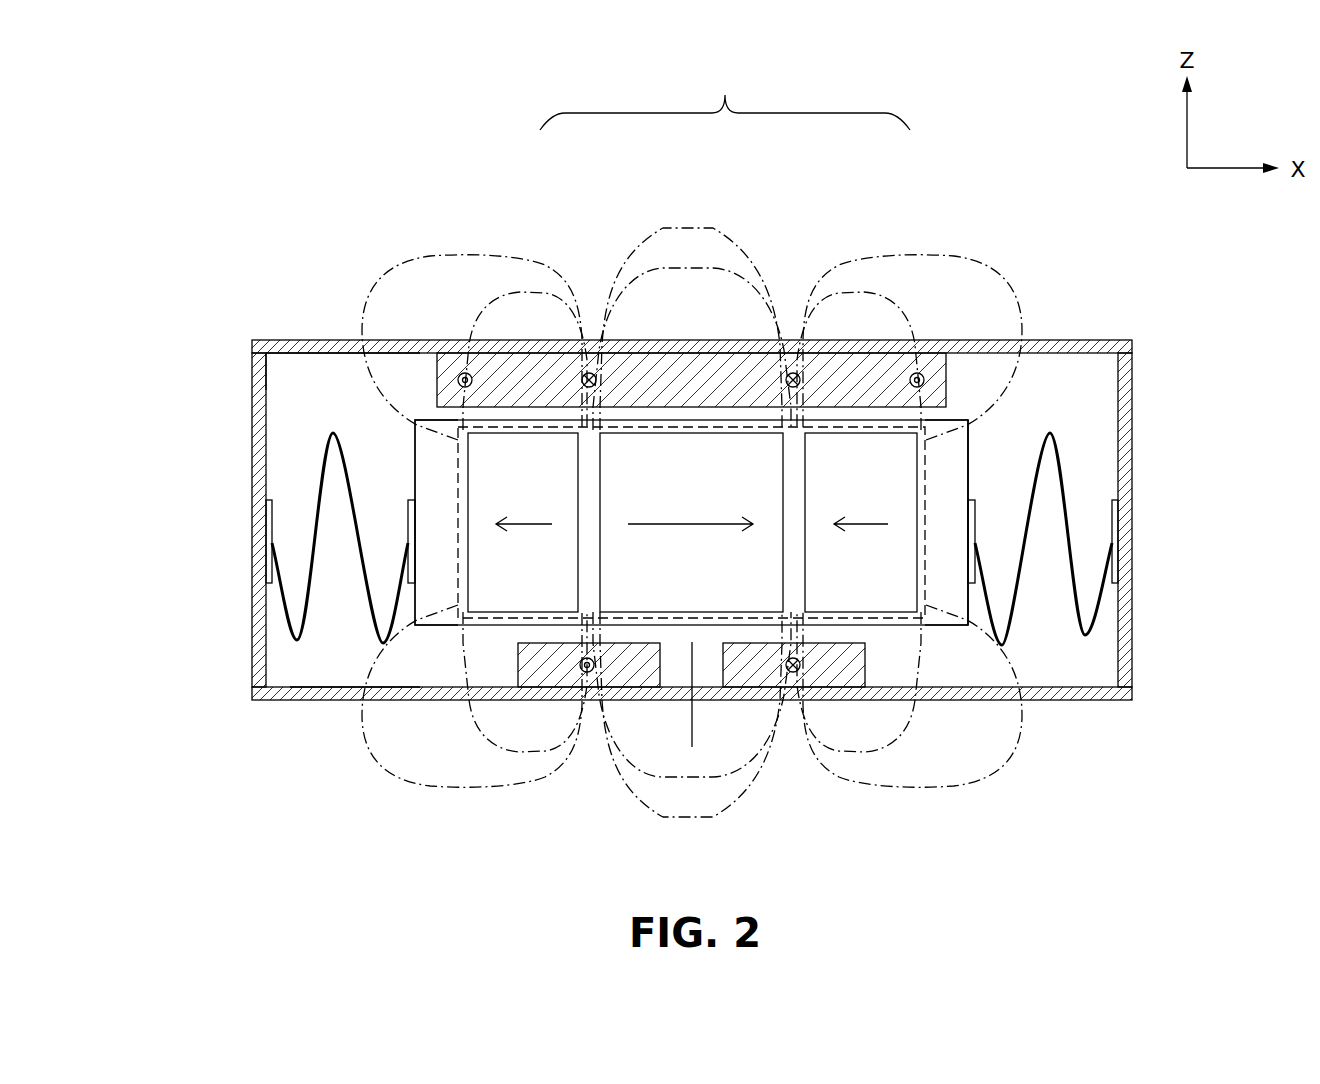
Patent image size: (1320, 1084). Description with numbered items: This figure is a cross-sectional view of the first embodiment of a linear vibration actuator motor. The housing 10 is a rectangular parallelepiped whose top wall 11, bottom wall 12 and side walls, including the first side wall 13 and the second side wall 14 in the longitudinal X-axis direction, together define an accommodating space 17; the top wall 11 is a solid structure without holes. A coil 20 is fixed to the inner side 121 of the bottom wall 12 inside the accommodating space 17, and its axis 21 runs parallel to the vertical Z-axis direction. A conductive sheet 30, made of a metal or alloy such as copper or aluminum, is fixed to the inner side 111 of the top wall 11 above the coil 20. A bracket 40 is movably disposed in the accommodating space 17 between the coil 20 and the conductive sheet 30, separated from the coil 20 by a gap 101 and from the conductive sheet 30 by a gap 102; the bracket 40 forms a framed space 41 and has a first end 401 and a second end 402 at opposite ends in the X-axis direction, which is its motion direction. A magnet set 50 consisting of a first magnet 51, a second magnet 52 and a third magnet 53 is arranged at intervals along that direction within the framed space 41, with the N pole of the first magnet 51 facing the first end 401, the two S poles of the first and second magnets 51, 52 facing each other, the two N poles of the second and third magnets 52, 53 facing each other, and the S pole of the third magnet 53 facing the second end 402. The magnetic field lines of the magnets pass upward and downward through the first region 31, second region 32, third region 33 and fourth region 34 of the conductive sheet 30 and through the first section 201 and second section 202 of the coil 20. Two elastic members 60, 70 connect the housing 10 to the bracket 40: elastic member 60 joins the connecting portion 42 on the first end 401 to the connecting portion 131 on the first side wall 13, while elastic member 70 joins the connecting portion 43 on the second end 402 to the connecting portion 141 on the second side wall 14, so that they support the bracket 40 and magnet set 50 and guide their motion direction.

The housing 10 is at (178, 308).
The top wall 11 is at (346, 338).
The bottom wall 12 is at (437, 695).
The first side wall 13 is at (259, 379).
The second side wall 14 is at (1124, 647).
The accommodating space 17 is at (280, 370).
The inner side of the top wall 111 is at (305, 362).
The inner side of the bottom wall 121 is at (306, 670).
The connecting portion of the first side wall 131 is at (266, 569).
The connecting portion of the second side wall 141 is at (1118, 512).
The coil 20 is at (630, 680).
The first section of the coil 201 is at (587, 680).
The second section of the coil 202 is at (793, 680).
The axis of the coil 21 is at (702, 722).
The conductive sheet 30 is at (830, 367).
The first region of the conductive sheet 31 is at (460, 357).
The second region of the conductive sheet 32 is at (590, 356).
The third region of the conductive sheet 33 is at (792, 356).
The fourth region of the conductive sheet 34 is at (920, 356).
The bracket 40 is at (438, 450).
The framed space 41 is at (968, 444).
The first end of the bracket 401 is at (412, 472).
The second end of the bracket 402 is at (968, 490).
The connecting portion of the first end of the bracket 42 is at (405, 546).
The connecting portion of the second end of the bracket 43 is at (975, 542).
The magnet set 50 is at (692, 338).
The first magnet 51 is at (520, 462).
The second magnet 52 is at (683, 462).
The third magnet 53 is at (862, 462).
The elastic member 60 is at (273, 635).
The elastic member 70 is at (1077, 598).
The gap 101 is at (828, 633).
The gap 102 is at (935, 417).